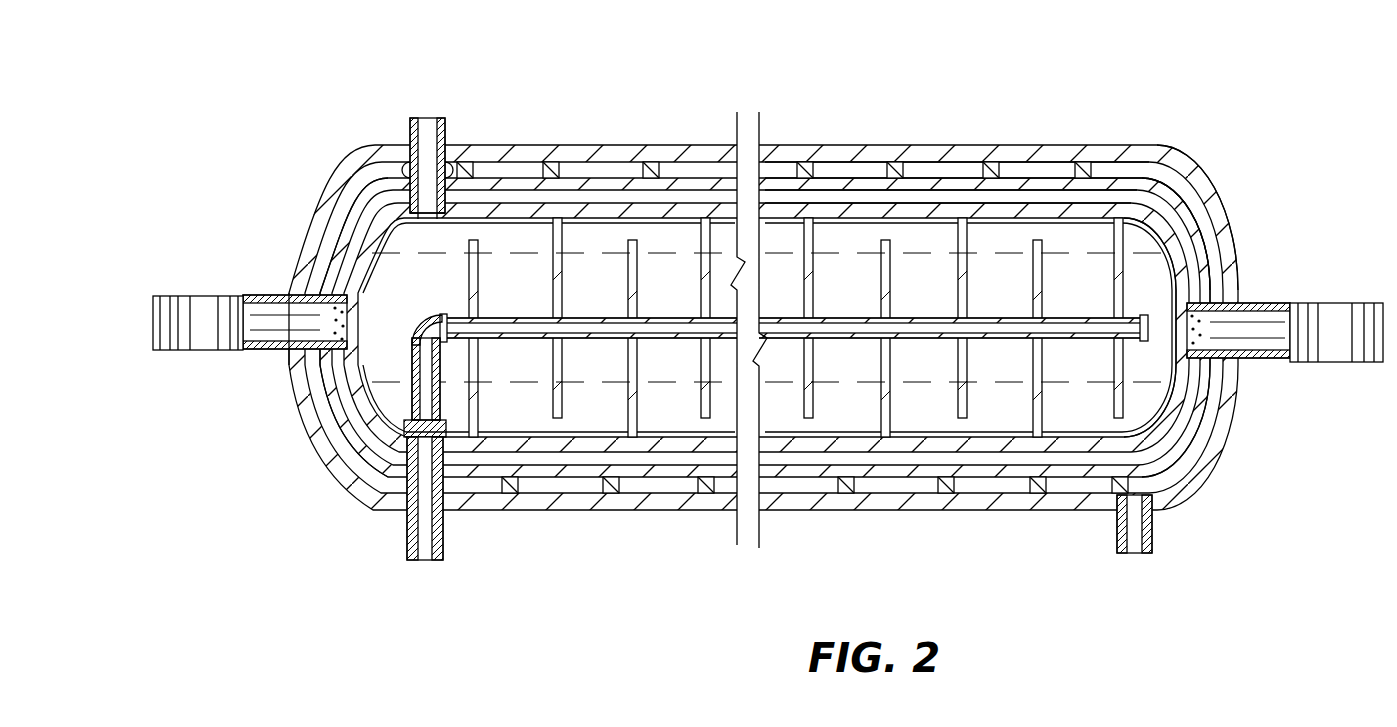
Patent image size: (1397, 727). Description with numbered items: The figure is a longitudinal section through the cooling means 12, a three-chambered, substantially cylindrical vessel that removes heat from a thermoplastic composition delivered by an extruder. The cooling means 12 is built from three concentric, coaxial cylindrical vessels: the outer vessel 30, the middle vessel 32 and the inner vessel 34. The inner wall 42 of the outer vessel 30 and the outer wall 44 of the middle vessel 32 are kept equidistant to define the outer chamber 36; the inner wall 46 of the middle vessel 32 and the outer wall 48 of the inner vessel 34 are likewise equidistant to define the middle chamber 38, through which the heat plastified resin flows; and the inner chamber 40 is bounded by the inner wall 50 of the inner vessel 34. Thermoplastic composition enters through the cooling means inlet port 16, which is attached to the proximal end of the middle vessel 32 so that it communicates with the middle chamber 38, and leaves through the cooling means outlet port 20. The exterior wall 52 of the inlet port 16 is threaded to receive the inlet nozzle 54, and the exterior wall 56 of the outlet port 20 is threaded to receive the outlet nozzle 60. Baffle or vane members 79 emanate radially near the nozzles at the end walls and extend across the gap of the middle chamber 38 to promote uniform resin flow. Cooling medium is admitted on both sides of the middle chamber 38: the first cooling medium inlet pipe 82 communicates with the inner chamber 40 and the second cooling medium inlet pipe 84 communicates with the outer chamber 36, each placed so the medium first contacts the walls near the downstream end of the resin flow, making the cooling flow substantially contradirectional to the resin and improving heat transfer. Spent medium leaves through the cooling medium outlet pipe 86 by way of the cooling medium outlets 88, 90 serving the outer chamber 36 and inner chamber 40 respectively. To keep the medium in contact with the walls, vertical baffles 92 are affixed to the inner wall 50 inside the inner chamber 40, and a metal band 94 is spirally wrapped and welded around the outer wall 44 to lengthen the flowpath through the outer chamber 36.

The cooling means 12 is at (303, 126).
The cooling means inlet port 16 is at (250, 316).
The cooling means outlet port 20 is at (1285, 333).
The outer vessel 30 is at (510, 152).
The middle vessel 32 is at (522, 185).
The inner vessel 34 is at (572, 212).
The outer chamber 36 is at (1117, 176).
The middle chamber 38 is at (1172, 228).
The inner chamber 40 is at (1142, 280).
The inner wall of outer vessel 42 is at (832, 164).
The outer wall of middle vessel 44 is at (870, 185).
The inner wall of middle vessel 46 is at (908, 196).
The outer wall of inner vessel 48 is at (935, 208).
The inner wall of inner vessel 50 is at (1025, 228).
The exterior wall of cooling means inlet port 52 is at (265, 350).
The inlet nozzle 54 is at (195, 350).
The exterior wall of cooling means outlet port 56 is at (1262, 358).
The outlet nozzle 60 is at (1330, 353).
The baffle or vane members 79 is at (347, 425).
The first cooling medium inlet pipe 82 is at (420, 522).
The second cooling medium inlet pipe 84 is at (1142, 530).
The cooling medium outlet pipe 86 is at (432, 120).
The cooling medium outlet 88 is at (402, 168).
The cooling medium outlet 90 is at (425, 224).
The vertical baffles 92 is at (700, 368).
The metal band 94 is at (650, 172).